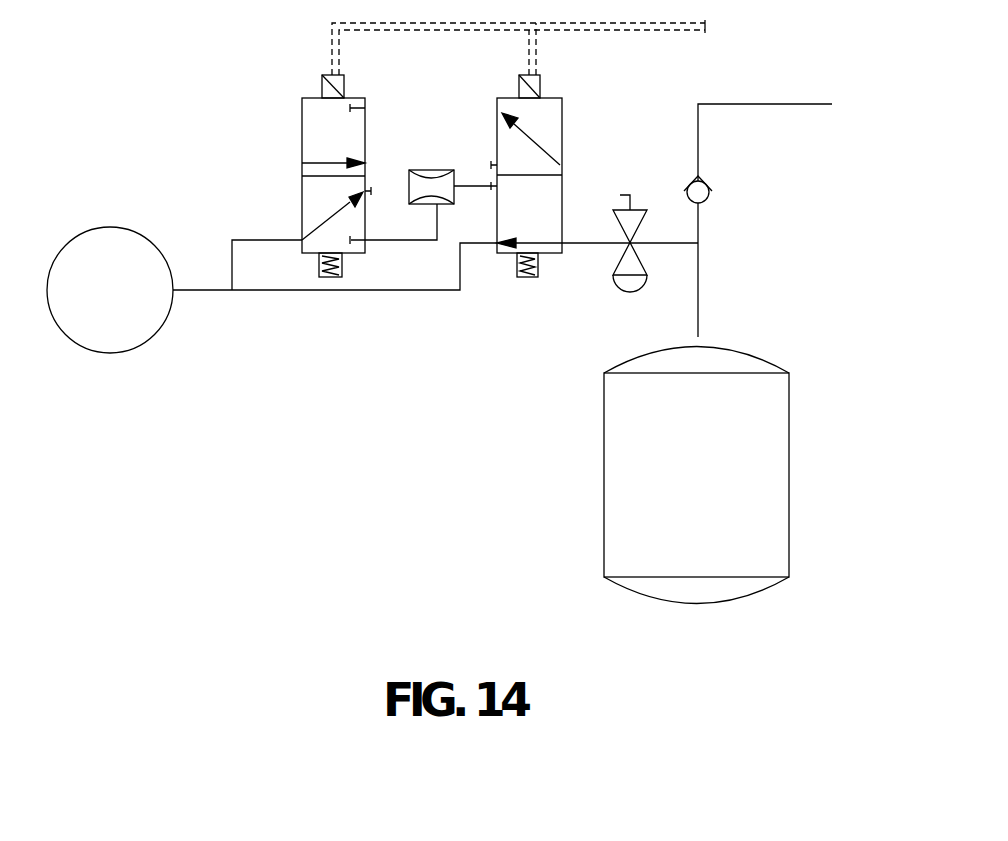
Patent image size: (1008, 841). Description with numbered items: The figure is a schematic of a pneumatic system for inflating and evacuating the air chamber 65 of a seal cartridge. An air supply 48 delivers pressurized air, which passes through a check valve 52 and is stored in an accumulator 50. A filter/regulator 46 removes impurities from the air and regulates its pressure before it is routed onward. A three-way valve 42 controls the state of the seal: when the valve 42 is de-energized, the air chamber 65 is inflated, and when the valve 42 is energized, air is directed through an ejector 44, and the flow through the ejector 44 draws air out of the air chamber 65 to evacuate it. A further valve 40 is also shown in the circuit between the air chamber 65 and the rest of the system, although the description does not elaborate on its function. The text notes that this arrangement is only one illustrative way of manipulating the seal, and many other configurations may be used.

The first solenoid valve 40 is at (312, 98).
The three-way valve 42 is at (563, 140).
The ejector 44 is at (425, 207).
The filter/regulator 46 is at (640, 205).
The air supply 48 is at (787, 134).
The accumulator 50 is at (713, 465).
The check valve 52 is at (706, 200).
The air chamber 65 is at (102, 228).